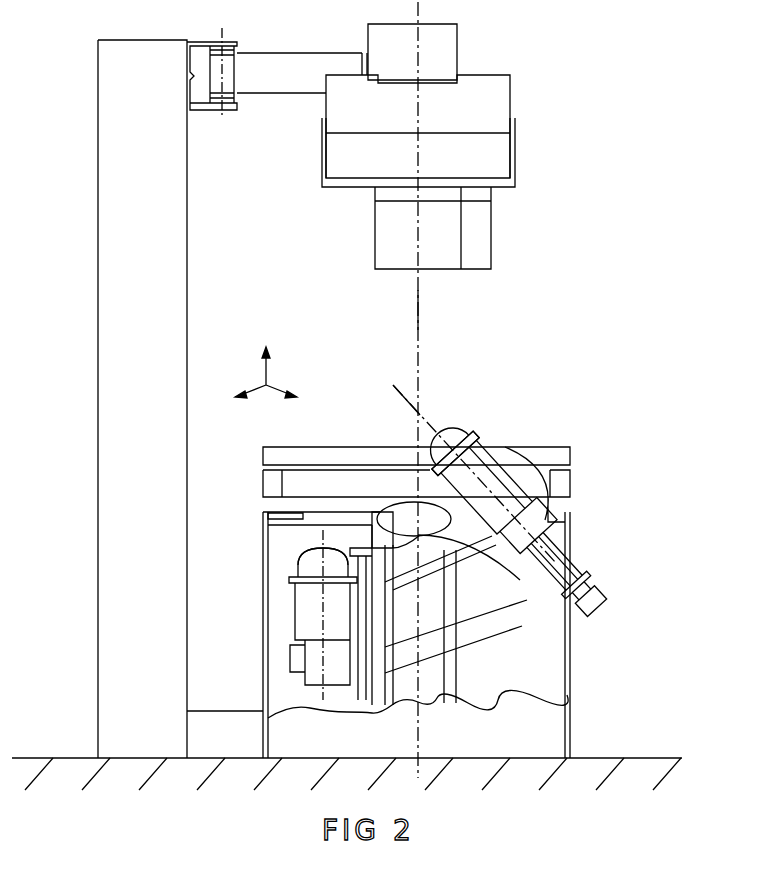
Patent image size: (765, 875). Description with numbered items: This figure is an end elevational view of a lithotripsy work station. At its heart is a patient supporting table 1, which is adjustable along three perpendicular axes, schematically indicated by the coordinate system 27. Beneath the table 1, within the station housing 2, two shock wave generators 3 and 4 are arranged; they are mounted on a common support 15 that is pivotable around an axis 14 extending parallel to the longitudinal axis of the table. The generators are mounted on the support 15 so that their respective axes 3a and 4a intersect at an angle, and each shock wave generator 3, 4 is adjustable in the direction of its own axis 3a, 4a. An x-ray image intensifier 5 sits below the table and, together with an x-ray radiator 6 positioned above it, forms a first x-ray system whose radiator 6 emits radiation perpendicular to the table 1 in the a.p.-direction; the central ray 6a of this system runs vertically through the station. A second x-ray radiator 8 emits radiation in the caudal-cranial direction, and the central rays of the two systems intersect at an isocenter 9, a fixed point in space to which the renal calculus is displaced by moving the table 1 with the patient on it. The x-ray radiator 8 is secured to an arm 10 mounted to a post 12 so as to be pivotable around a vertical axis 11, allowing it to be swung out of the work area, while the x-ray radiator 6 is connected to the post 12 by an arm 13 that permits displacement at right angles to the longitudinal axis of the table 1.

The patient supporting table 1 is at (318, 447).
The housing 2 is at (264, 577).
The shock wave generator 3 is at (492, 462).
The axis of shock wave generator 3a is at (437, 433).
The shock wave generator 4 is at (298, 608).
The axis of shock wave generator 4a is at (323, 538).
The x-ray image intensifier 5 is at (403, 502).
The x-ray radiator 6 is at (460, 42).
The central ray 6a is at (426, 311).
The x-ray radiator 8 is at (500, 155).
The isocenter 9 is at (418, 408).
The arm 10 is at (293, 62).
The vertical axis 11 is at (222, 46).
The post 12 is at (99, 293).
The arm 13 is at (326, 54).
The axis 14 is at (455, 558).
The common support 15 is at (477, 633).
The coordinate system 27 is at (262, 372).